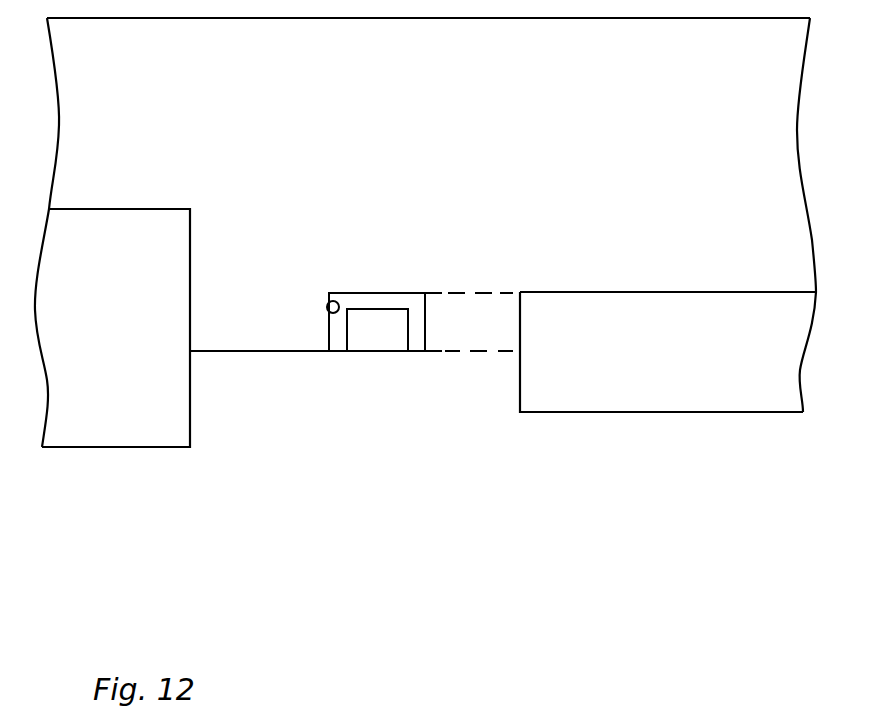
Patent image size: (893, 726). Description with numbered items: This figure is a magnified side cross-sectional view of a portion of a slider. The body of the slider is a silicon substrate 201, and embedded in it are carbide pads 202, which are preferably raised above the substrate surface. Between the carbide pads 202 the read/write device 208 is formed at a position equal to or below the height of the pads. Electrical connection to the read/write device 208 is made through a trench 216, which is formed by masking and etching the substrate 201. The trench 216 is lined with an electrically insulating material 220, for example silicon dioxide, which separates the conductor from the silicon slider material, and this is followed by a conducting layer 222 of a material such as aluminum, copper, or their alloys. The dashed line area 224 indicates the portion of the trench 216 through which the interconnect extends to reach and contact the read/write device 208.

The silicon substrate 201 is at (432, 134).
The carbide pad 202 is at (113, 426).
The read/write device 208 is at (618, 382).
The trench 216 is at (328, 299).
The insulating layer 220 is at (414, 345).
The conducting layer 222 is at (370, 343).
The dashed line area 224 is at (474, 331).